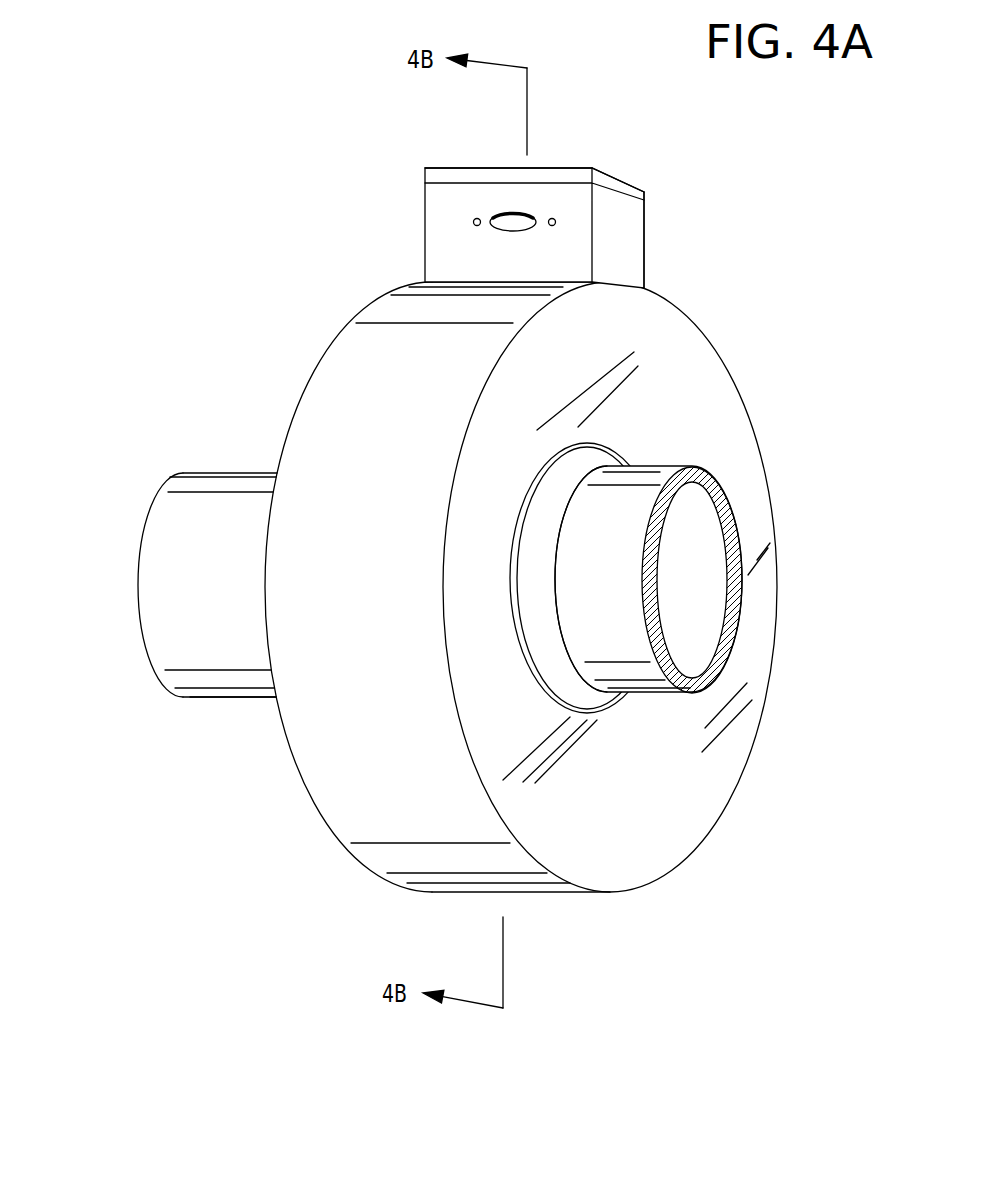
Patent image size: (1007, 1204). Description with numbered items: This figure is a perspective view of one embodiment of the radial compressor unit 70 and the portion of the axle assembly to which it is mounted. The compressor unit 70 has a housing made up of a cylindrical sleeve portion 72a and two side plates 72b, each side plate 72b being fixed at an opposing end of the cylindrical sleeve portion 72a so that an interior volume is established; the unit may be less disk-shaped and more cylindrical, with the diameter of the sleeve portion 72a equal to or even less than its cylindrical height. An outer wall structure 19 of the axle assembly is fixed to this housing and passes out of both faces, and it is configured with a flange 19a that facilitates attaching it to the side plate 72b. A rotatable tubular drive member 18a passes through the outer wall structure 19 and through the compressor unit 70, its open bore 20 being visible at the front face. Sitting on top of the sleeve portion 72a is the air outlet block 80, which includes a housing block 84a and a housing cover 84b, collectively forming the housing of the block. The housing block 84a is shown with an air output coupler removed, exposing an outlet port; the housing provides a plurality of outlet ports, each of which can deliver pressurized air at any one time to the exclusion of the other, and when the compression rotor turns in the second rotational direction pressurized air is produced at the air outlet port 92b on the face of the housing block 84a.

The radial compressor unit 70 is at (504, 656).
The cylindrical sleeve portion 72a is at (320, 753).
The side plate 72b is at (687, 823).
The air outlet block 80 is at (510, 200).
The housing block 84a is at (632, 255).
The housing cover 84b is at (603, 182).
The air outlet port 92b is at (513, 231).
The outer wall structure 19 is at (150, 578).
The flange 19a is at (547, 637).
The rotatable tubular drive member 18a is at (693, 580).
The bore 20 is at (707, 527).